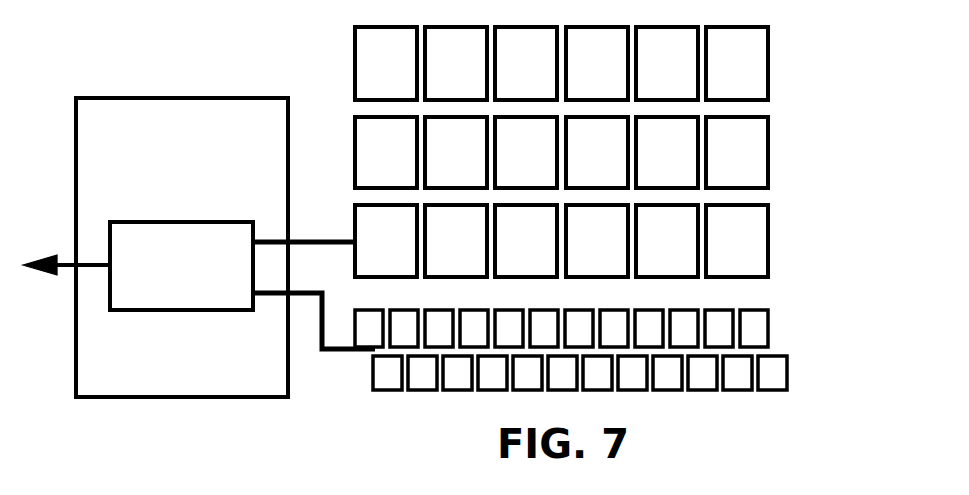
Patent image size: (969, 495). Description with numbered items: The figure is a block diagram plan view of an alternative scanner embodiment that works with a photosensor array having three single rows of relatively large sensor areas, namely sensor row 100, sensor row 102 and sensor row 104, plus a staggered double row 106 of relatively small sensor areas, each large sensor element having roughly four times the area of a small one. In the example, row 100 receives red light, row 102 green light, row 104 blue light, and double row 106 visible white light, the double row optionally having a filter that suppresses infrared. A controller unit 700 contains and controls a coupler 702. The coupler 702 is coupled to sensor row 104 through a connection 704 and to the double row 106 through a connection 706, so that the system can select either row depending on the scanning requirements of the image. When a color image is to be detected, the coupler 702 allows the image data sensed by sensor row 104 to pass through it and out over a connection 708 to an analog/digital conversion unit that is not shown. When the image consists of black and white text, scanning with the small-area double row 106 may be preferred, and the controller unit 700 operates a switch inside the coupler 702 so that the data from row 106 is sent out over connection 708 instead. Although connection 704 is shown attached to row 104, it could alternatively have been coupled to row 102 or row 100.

The sensor row 100 is at (770, 83).
The sensor row 102 is at (770, 173).
The sensor row 104 is at (770, 262).
The double sensor row 106 is at (787, 356).
The controller unit 700 is at (273, 392).
The coupler 702 is at (238, 305).
The connection 704 is at (333, 240).
The connection 706 is at (340, 352).
The connection 708 is at (88, 268).